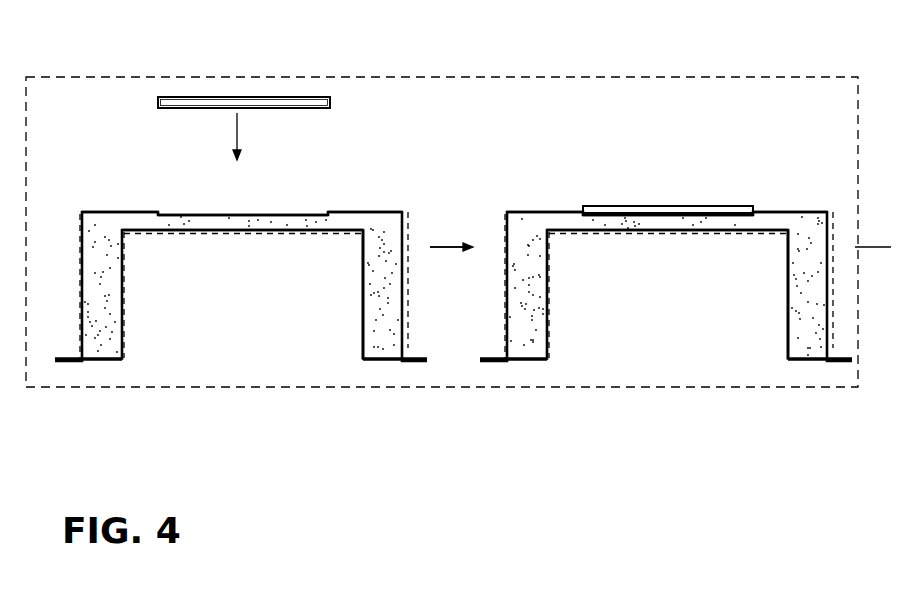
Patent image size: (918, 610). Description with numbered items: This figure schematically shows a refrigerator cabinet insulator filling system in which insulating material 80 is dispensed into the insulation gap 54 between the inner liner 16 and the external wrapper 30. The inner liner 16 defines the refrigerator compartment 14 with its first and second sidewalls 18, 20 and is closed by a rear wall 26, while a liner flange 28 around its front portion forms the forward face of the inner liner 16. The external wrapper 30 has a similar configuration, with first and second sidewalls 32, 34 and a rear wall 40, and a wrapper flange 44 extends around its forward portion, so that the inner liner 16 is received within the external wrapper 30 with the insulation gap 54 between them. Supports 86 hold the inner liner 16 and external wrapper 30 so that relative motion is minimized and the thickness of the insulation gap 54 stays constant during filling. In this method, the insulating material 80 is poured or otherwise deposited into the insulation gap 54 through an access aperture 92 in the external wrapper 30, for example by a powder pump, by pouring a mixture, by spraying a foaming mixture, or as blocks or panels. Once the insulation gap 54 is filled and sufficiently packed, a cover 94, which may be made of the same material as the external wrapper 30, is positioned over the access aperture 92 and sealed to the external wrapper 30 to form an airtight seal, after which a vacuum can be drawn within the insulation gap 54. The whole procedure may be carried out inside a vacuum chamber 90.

The vacuum chamber 90 is at (540, 77).
The cover 94 is at (158, 103).
The refrigerator compartment 14 is at (253, 326).
The external wrapper 30 is at (95, 211).
The rear wall 40 is at (133, 212).
The supports 86 is at (120, 273).
The first sidewall 18 is at (120, 325).
The first sidewall 32 is at (80, 313).
The access aperture 92 is at (303, 212).
The inner liner 16 is at (331, 234).
The rear wall 26 is at (230, 232).
The insulation gap 54 is at (376, 277).
The insulating material 80 is at (378, 310).
The second sidewall 34 is at (403, 313).
The second sidewall 20 is at (363, 325).
The liner flange 28 is at (790, 363).
The wrapper flange 44 is at (428, 358).